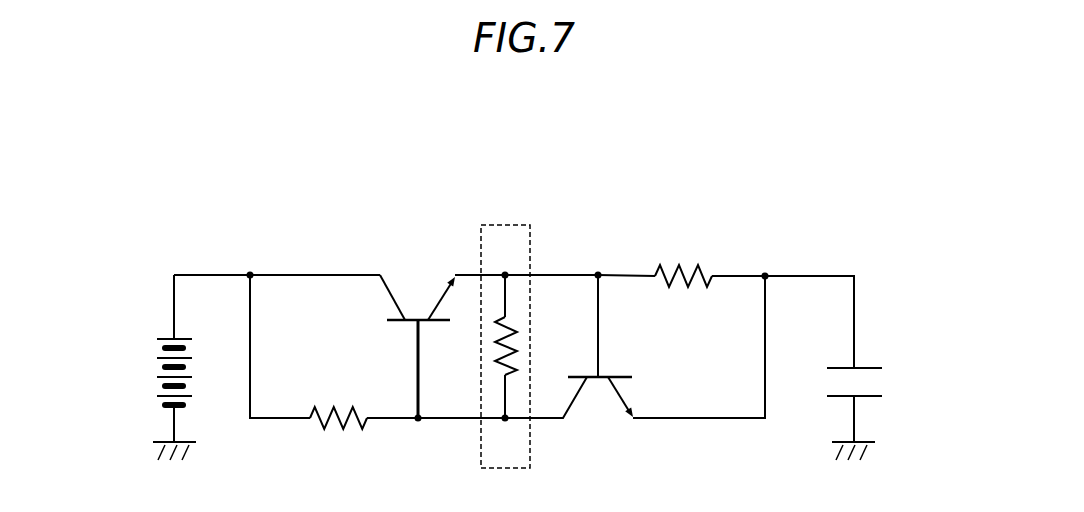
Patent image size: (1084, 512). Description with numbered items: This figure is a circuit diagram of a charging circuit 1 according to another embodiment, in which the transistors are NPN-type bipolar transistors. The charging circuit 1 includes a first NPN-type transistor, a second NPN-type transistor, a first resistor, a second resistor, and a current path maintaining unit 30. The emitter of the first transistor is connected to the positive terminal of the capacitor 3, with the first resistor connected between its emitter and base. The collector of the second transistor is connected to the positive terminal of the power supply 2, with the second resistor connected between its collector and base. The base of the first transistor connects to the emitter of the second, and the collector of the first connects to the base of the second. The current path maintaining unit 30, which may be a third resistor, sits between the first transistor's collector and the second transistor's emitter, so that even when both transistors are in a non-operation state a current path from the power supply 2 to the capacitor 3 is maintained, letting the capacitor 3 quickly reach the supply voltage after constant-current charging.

The charging circuit 1 is at (830, 252).
The power supply 2 is at (162, 333).
The capacitor 3 is at (866, 362).
The current path maintaining unit 30 is at (502, 221).